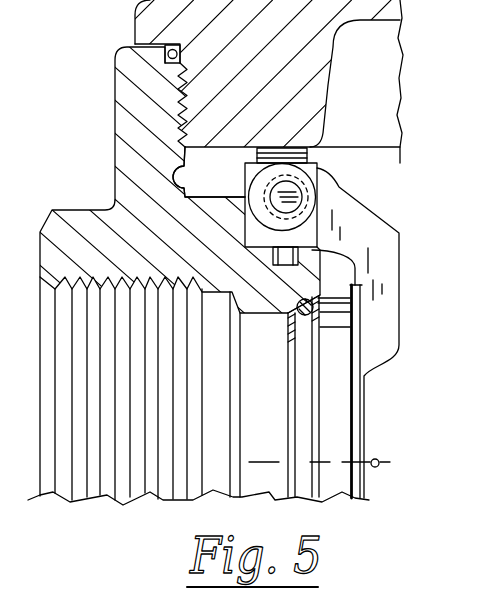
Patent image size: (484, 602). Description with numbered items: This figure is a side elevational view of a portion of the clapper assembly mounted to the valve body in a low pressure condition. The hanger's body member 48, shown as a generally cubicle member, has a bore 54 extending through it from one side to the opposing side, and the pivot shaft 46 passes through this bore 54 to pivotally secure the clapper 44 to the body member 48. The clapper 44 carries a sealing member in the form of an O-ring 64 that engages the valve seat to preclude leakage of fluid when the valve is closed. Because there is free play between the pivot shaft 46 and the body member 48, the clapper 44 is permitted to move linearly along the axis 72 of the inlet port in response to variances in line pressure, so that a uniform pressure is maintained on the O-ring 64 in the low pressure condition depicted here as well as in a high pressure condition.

The clapper 44 is at (365, 408).
The pivot shaft 46 is at (303, 201).
The body member 48 is at (244, 165).
The bore 54 is at (301, 174).
The O-ring 64 is at (299, 302).
The axis 72 is at (376, 459).